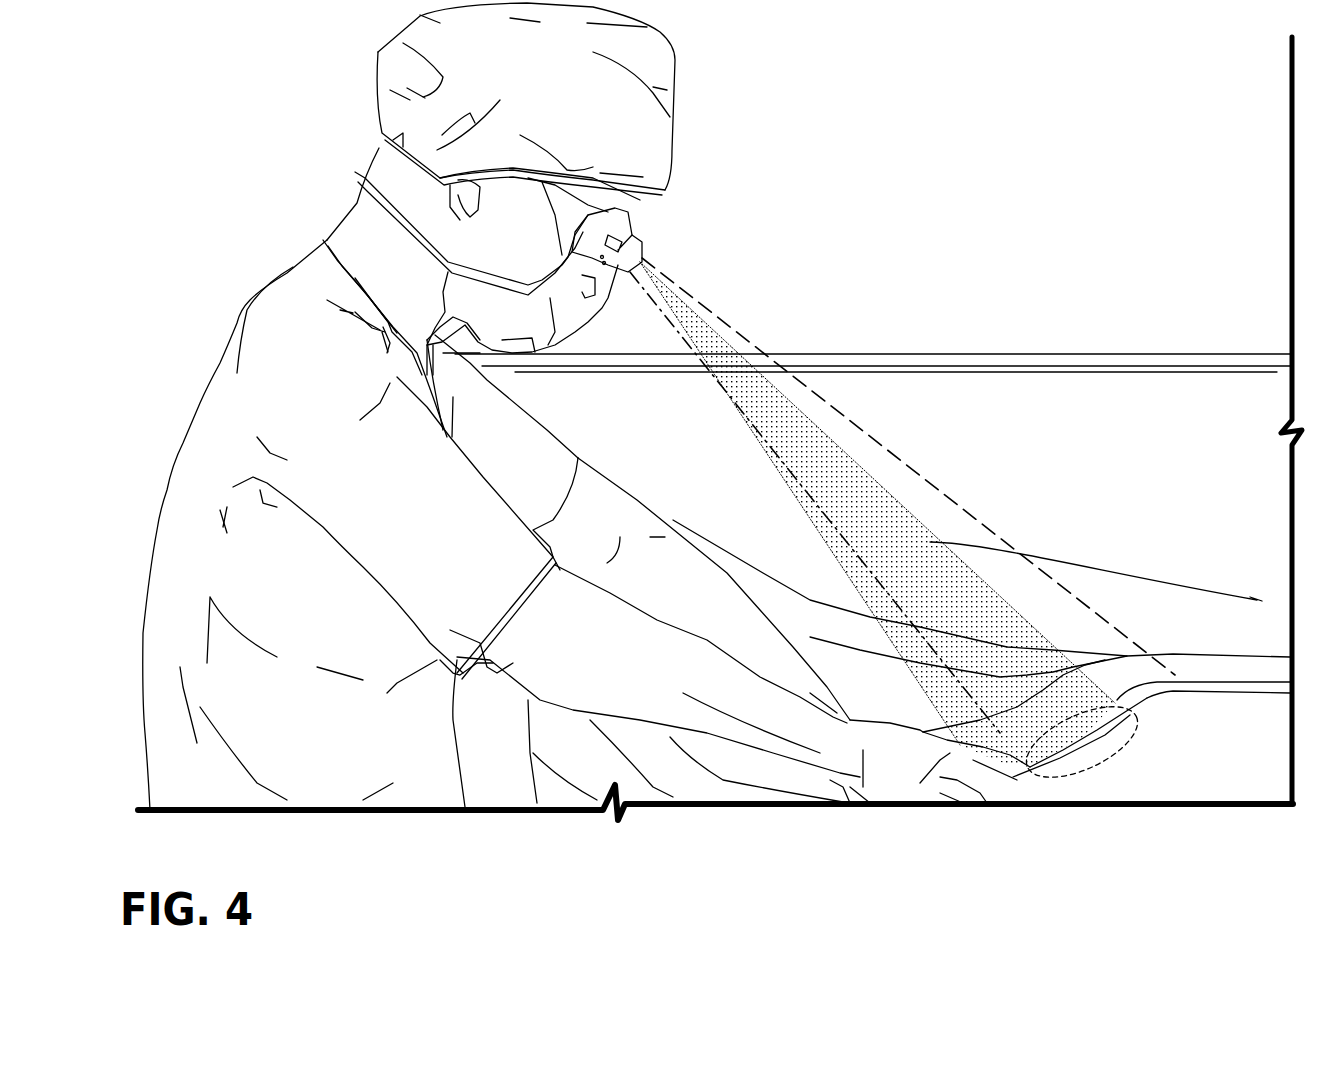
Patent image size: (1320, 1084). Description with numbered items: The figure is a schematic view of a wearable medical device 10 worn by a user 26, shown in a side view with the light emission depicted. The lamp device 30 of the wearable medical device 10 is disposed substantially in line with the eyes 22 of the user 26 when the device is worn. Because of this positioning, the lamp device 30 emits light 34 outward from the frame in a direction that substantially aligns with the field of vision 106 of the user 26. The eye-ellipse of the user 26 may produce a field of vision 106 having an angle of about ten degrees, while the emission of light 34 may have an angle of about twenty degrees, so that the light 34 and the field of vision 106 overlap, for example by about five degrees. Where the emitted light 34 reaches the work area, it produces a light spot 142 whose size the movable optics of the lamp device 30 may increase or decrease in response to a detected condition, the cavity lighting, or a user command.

The wearable medical device 10 is at (522, 182).
The eyes 22 is at (597, 208).
The user 26 is at (267, 332).
The lamp device 30 is at (620, 222).
The light 34 is at (945, 683).
The field of vision 106 is at (942, 497).
The light spot 142 is at (1077, 767).